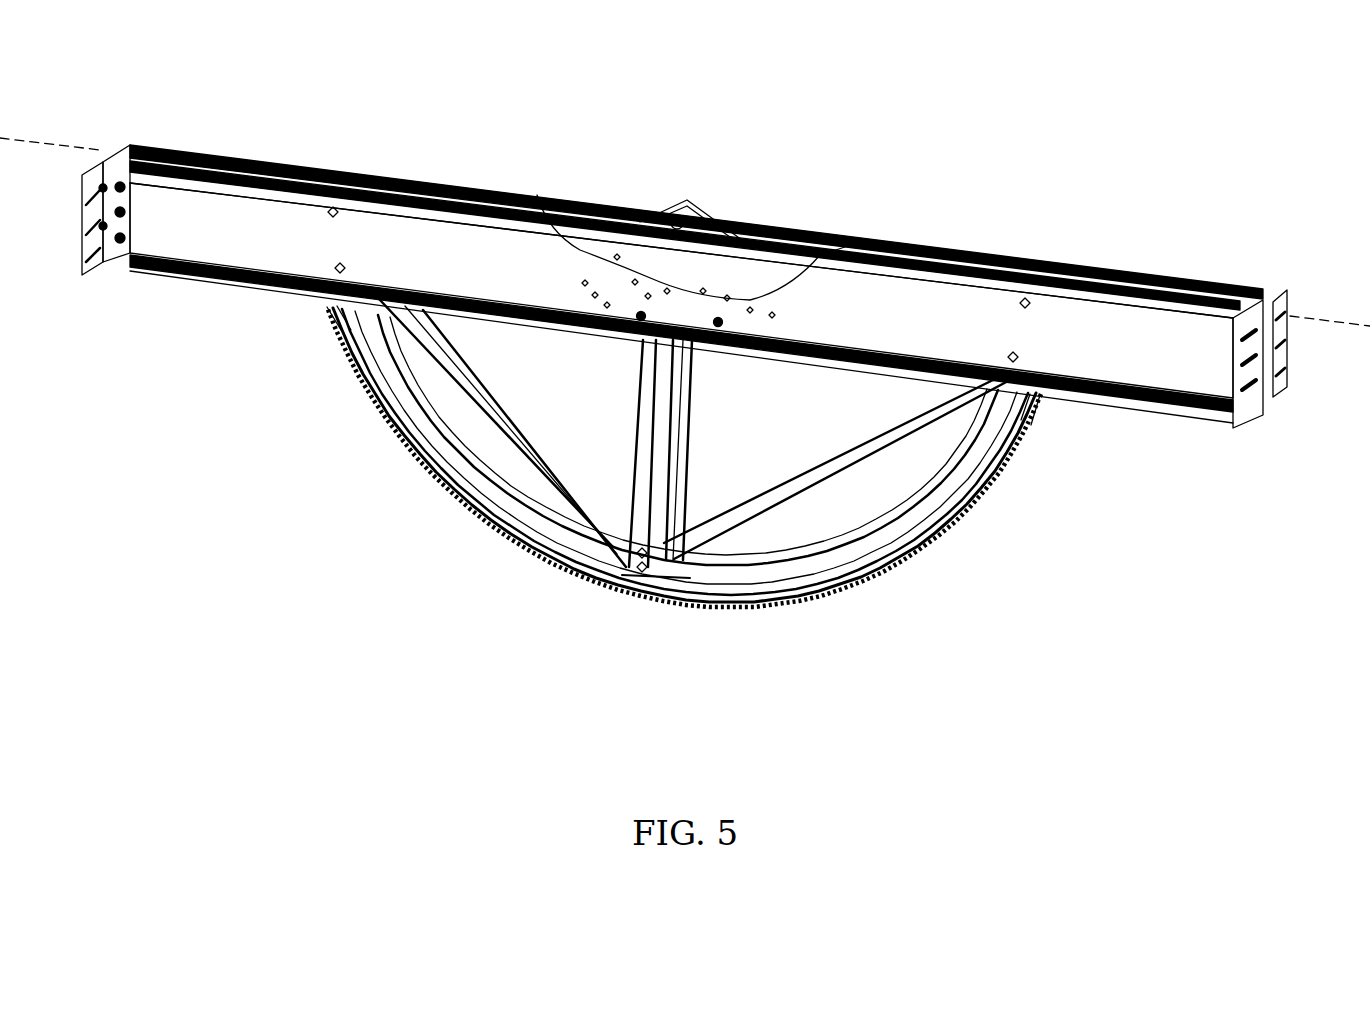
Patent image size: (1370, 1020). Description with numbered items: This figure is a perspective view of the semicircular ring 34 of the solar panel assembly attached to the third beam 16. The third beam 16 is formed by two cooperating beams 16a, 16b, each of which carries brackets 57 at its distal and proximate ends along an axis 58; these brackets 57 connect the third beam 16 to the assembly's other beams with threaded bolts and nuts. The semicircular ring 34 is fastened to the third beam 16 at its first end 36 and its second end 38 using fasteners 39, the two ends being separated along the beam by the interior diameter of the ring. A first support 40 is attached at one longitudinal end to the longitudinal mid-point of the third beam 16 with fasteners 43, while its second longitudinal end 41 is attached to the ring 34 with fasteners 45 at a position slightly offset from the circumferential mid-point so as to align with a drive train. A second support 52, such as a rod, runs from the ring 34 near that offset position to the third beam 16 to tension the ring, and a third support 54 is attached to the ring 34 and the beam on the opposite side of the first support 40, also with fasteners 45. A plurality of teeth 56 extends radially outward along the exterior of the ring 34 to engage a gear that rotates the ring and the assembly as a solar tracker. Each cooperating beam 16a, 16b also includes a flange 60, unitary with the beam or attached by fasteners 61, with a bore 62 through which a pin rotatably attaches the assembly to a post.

The third beam 16 is at (1195, 277).
The cooperating beam 16a is at (1185, 375).
The cooperating beam 16b is at (960, 246).
The semicircular ring 34 is at (1020, 440).
The first end 36 is at (327, 300).
The second end 38 is at (1040, 395).
The fasteners 39 is at (333, 208).
The first support 40 is at (686, 418).
The second longitudinal end 41 is at (673, 517).
The fasteners 43 is at (537, 195).
The fasteners 45 is at (640, 540).
The second support 52 is at (500, 418).
The third support 54 is at (830, 465).
The teeth 56 is at (690, 610).
The brackets 57 is at (125, 140).
The axis 58 is at (40, 142).
The flange 60 is at (660, 212).
The fasteners 61 is at (578, 210).
The bore 62 is at (690, 200).